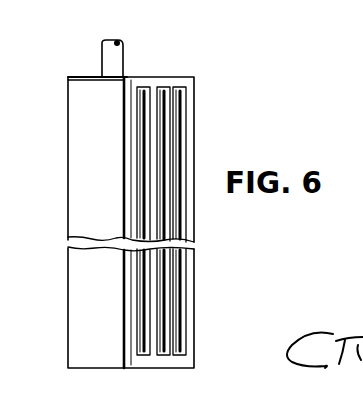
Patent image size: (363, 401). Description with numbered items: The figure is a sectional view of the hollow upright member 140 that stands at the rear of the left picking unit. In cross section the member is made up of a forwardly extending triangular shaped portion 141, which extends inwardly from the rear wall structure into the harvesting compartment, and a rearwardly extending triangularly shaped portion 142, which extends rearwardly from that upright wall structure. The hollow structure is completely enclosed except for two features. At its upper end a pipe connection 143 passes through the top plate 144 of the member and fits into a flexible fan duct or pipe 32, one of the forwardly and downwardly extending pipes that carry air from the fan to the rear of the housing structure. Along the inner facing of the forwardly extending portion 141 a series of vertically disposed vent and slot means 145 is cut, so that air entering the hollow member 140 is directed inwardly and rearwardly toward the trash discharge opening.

The flexible pipe 32 is at (110, 44).
The hollow upright member 140 is at (131, 187).
The forwardly extending triangular shaped portion 141 is at (190, 296).
The rearwardly extending triangularly shaped portion 142 is at (76, 201).
The pipe connection 143 is at (124, 76).
The top plate 144 is at (77, 77).
The vertically disposed vent and slot means 145 is at (182, 105).